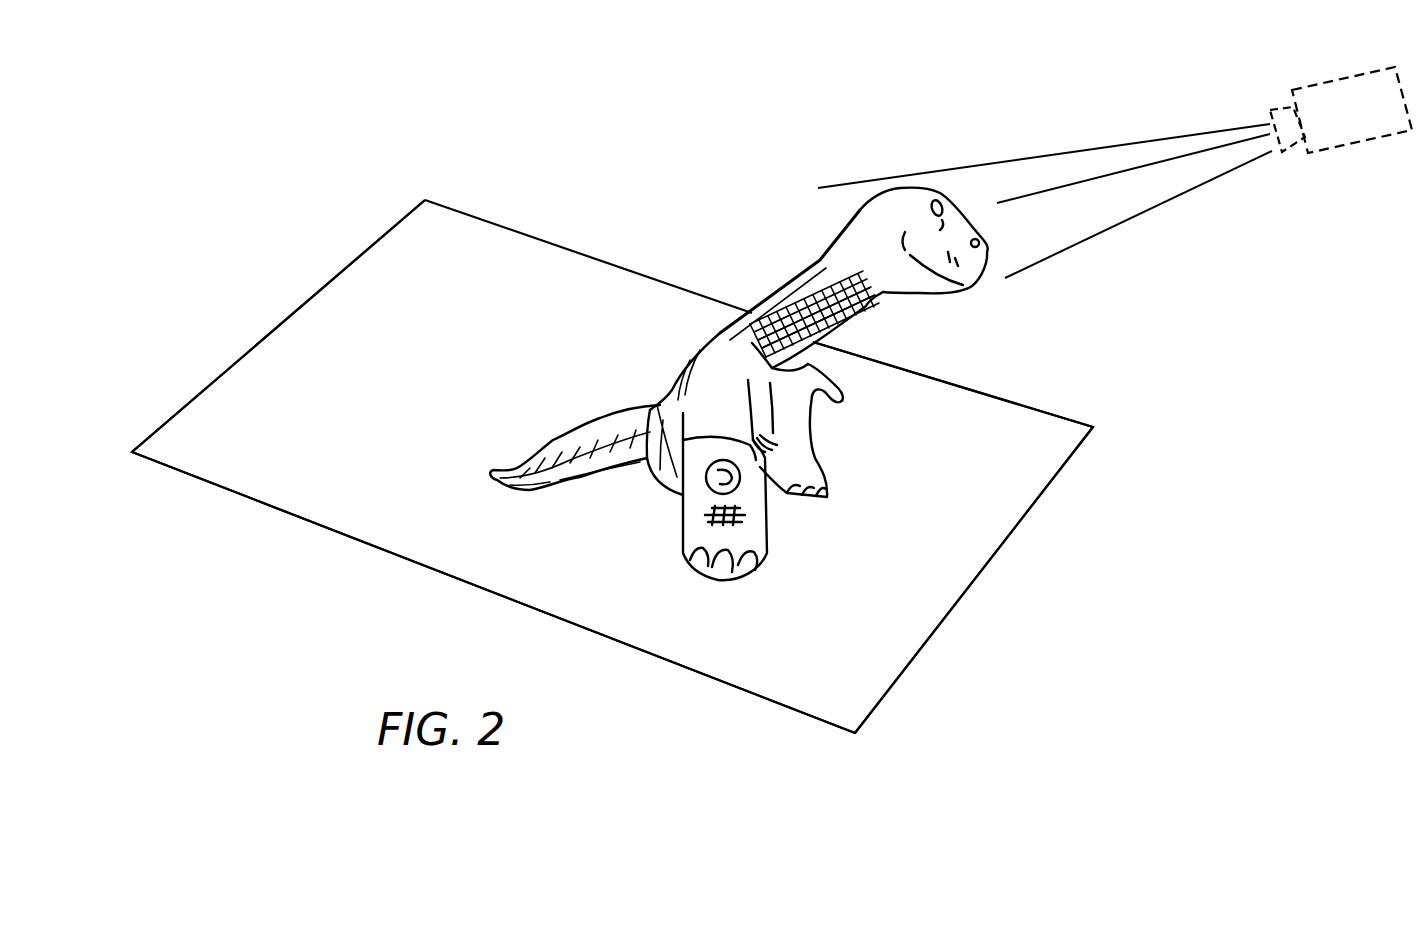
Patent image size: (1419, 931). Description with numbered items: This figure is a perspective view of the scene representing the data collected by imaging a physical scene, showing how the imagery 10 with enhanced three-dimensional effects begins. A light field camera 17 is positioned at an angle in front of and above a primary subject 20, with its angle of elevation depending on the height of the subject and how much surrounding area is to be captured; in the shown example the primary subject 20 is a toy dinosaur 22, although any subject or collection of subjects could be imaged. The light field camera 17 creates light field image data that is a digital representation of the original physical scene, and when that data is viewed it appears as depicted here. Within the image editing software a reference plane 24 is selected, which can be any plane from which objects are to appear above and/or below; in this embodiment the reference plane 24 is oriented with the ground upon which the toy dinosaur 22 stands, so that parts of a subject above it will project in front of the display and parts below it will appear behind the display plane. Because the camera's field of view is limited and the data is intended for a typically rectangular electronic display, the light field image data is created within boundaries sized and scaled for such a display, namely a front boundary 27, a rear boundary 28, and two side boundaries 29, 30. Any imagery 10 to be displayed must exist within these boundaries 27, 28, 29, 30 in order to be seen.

The imagery 10 is at (695, 82).
The light field camera 17 is at (1320, 85).
The primary subject 20 is at (753, 310).
The toy dinosaur 22 is at (820, 293).
The reference plane 24 is at (910, 603).
The front boundary 27 is at (975, 583).
The rear boundary 28 is at (305, 300).
The side boundary 29 is at (668, 665).
The side boundary 30 is at (983, 392).